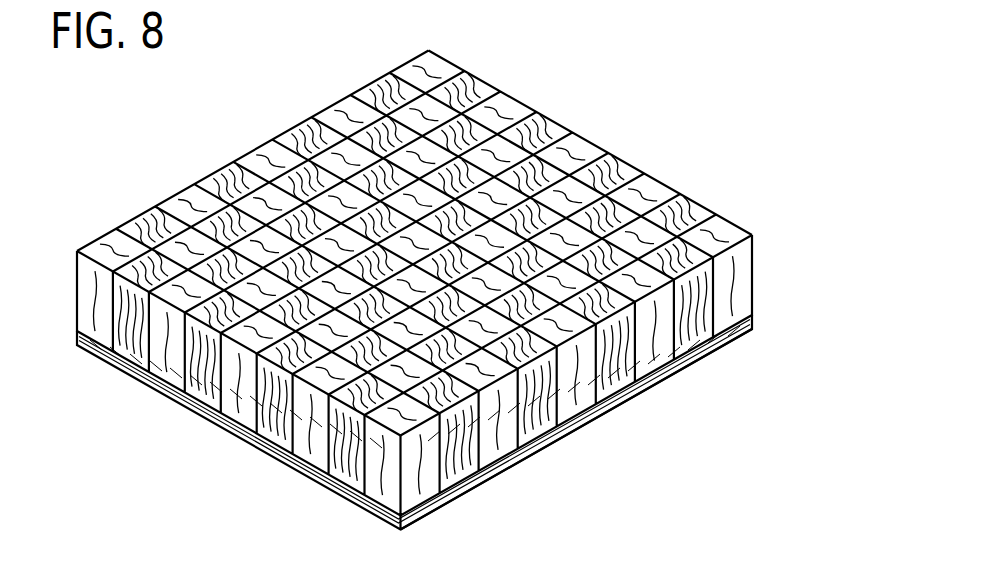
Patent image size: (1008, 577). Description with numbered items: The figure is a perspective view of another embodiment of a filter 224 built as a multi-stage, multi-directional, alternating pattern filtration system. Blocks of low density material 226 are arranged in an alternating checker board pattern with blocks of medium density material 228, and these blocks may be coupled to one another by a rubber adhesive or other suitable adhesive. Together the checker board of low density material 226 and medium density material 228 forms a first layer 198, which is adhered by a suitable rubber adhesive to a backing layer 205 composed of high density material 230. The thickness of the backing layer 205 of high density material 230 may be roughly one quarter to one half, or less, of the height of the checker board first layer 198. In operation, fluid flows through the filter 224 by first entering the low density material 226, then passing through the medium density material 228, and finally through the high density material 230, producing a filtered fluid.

The first layer 198 is at (770, 262).
The backing layer 205 is at (770, 317).
The filter 224 is at (243, 493).
The low density material 226 is at (433, 54).
The medium density material 228 is at (370, 72).
The high density material 230 is at (595, 417).